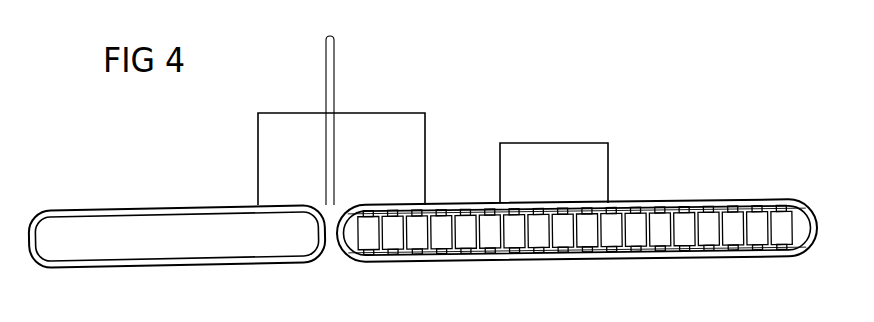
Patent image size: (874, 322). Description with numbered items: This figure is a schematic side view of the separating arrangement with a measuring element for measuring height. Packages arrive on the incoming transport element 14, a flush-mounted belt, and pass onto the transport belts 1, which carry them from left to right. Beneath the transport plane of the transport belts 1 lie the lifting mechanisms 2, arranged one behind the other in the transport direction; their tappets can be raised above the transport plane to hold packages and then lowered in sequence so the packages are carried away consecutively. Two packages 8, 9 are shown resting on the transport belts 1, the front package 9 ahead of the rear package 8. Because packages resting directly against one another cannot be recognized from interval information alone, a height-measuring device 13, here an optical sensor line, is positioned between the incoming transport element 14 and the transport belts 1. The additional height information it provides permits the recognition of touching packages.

The transport belts 1 is at (802, 201).
The lifting mechanisms 2 is at (705, 227).
The package 8 is at (390, 146).
The package 9 is at (552, 165).
The height-measuring device 13 is at (330, 58).
The incoming transport element 14 is at (181, 204).